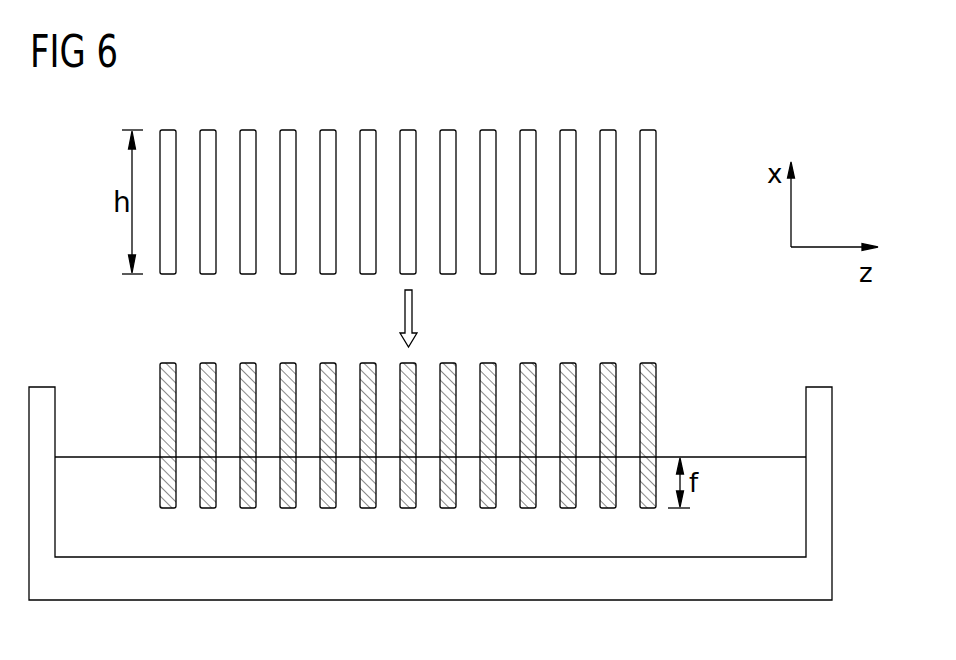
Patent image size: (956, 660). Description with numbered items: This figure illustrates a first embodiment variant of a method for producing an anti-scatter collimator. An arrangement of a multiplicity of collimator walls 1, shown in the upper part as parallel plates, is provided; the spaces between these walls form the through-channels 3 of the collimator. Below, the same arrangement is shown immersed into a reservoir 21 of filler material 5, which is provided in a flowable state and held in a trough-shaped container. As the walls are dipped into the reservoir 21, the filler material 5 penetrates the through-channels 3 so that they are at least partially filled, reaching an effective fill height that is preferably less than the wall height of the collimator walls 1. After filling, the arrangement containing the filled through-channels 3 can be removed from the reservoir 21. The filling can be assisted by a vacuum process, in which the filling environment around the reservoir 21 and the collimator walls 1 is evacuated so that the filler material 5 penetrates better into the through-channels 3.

The collimator walls 1 is at (168, 128).
The through-channels 3 is at (388, 168).
The filler material 5 is at (117, 465).
The reservoir 21 is at (860, 432).